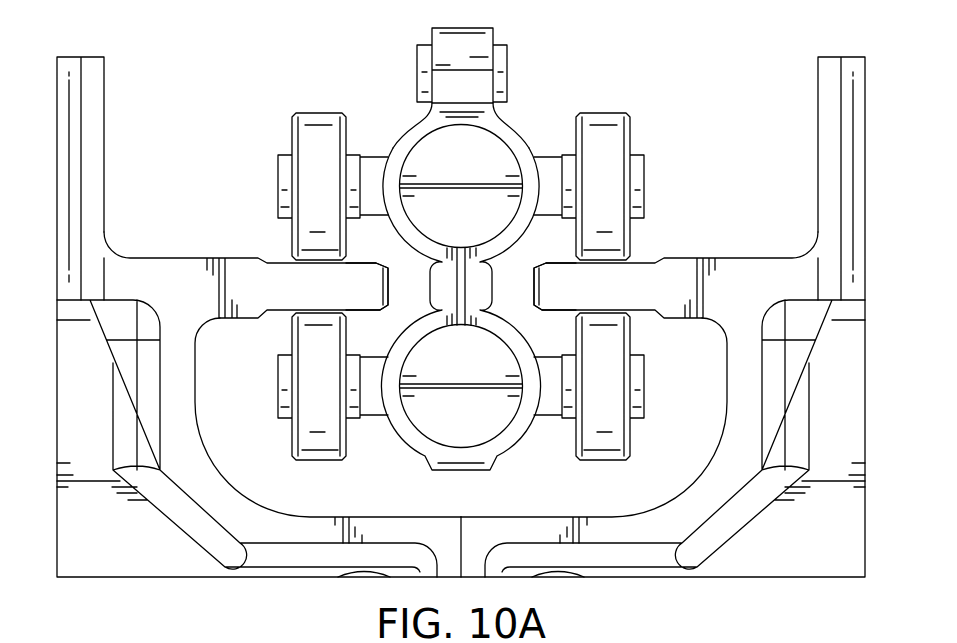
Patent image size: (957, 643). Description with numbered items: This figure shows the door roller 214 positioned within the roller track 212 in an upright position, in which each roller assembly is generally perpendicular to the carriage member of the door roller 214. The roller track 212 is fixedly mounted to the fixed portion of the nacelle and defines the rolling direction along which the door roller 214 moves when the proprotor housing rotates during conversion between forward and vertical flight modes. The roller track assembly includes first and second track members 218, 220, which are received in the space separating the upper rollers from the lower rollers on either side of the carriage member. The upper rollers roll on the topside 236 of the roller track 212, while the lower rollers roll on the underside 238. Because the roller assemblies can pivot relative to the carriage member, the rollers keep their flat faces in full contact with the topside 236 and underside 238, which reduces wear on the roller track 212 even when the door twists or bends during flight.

The roller track 212 is at (247, 273).
The door roller 214 is at (528, 70).
The first track member 218 is at (348, 278).
The second track member 220 is at (544, 199).
The topside 236 is at (285, 262).
The underside 238 is at (285, 316).